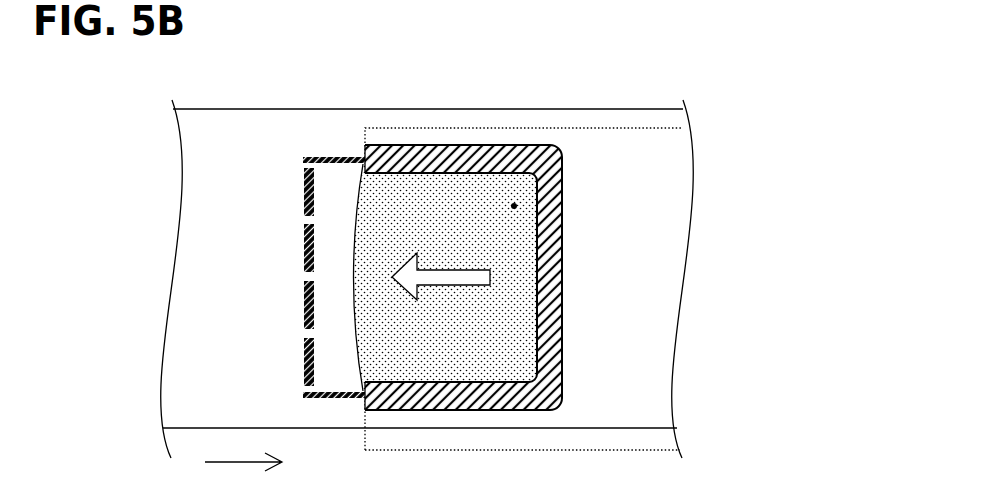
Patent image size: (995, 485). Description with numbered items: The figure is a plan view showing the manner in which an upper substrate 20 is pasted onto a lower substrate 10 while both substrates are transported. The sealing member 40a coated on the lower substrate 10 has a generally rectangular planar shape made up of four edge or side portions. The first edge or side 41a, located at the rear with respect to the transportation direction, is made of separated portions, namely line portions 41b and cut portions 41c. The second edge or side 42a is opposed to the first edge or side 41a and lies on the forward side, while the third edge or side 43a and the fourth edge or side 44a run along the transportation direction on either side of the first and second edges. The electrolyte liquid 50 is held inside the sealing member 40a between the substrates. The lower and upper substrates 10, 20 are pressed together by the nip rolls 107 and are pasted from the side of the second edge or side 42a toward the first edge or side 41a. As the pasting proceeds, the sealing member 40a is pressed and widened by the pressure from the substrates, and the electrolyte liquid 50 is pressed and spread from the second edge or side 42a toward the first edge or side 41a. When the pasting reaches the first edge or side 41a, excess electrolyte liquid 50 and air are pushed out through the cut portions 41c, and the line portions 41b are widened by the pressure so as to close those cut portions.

The lower substrate 10 is at (230, 108).
The upper substrate 20 is at (598, 450).
The sealing member 40a is at (431, 279).
The first edge or side 41a is at (253, 277).
The line portions 41b is at (300, 372).
The cut portions 41c is at (300, 333).
The second edge or side 42a is at (575, 252).
The third edge or side 43a is at (412, 146).
The fourth edge or side 44a is at (412, 413).
The electrolyte liquid 50 is at (514, 206).
The nip rolls 107 is at (343, 0).